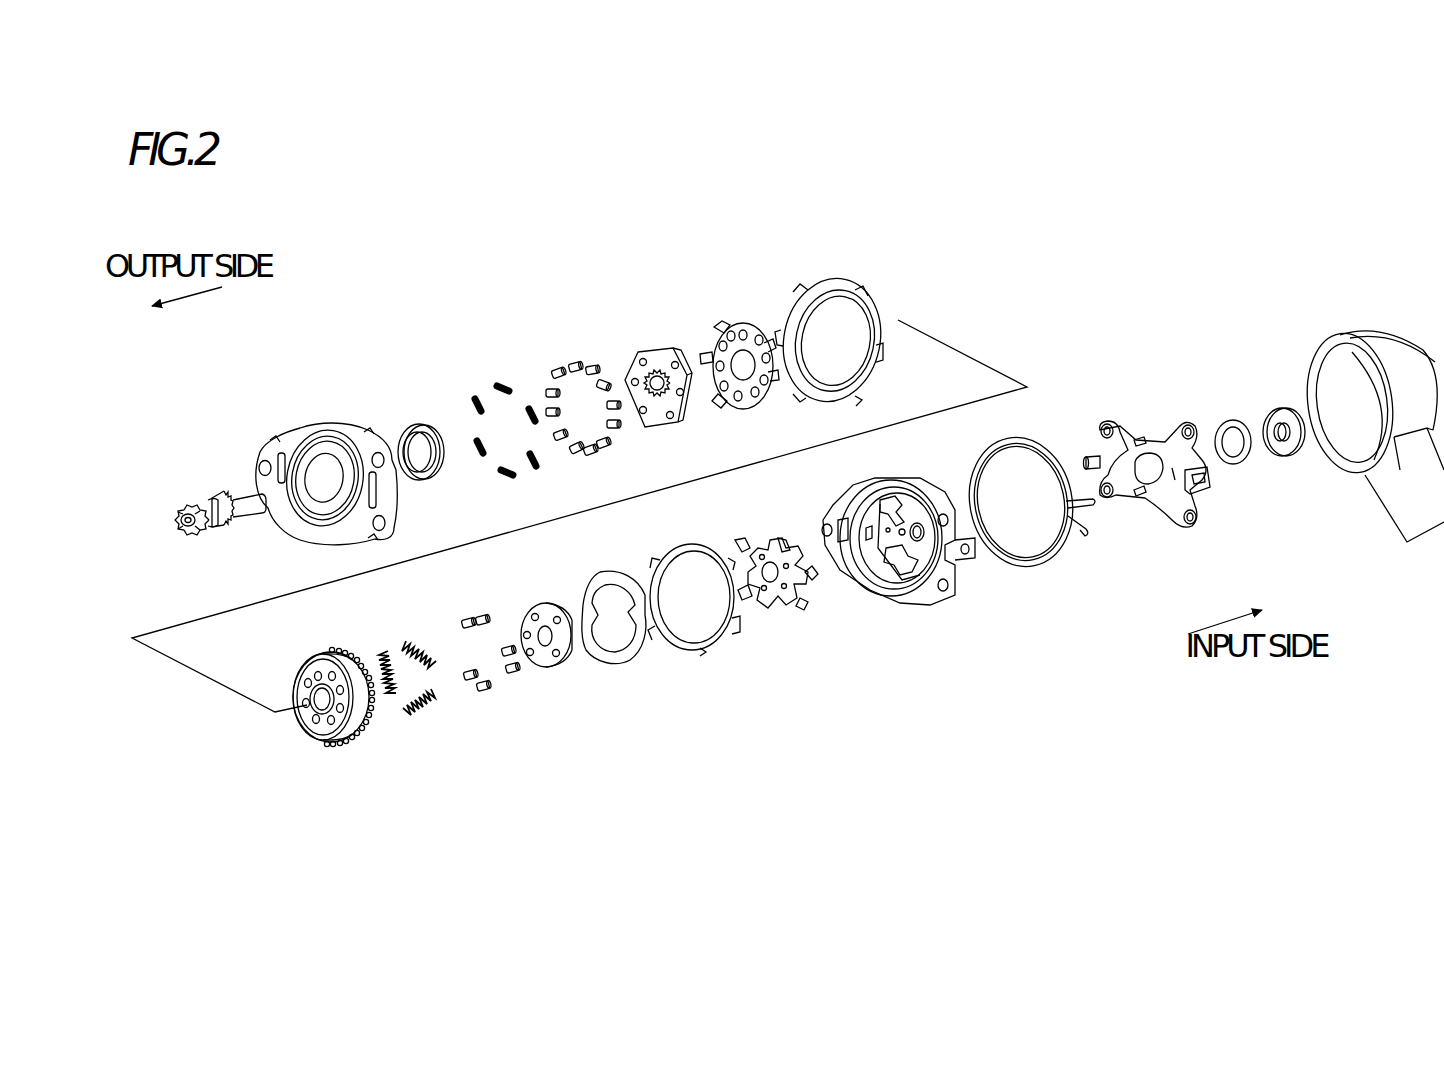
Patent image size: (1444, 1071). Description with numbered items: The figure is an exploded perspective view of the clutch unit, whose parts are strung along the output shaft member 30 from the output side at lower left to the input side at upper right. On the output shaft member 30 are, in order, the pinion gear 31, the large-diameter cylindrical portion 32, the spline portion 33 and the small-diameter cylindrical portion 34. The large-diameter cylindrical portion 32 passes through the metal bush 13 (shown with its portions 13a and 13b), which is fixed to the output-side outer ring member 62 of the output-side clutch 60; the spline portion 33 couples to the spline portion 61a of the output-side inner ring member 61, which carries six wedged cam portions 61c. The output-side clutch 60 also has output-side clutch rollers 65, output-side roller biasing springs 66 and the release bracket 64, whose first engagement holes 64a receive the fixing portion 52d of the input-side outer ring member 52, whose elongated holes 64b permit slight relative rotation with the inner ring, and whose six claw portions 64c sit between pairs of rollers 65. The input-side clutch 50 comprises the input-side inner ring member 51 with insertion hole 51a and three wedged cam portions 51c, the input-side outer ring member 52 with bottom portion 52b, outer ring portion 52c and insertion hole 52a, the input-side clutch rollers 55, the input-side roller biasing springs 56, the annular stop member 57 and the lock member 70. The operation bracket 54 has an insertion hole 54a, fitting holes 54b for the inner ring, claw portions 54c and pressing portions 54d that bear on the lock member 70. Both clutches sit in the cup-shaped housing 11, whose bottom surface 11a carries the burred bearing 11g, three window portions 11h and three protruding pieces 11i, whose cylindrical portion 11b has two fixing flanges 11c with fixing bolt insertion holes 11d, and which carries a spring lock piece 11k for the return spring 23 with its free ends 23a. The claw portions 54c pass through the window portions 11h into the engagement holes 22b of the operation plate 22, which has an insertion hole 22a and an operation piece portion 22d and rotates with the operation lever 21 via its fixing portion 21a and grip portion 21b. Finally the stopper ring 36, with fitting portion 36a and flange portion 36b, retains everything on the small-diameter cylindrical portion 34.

The housing 11 is at (947, 632).
The bottom surface 11a is at (880, 500).
The cylindrical portion 11b is at (906, 480).
The fixing flanges 11c is at (836, 516).
The fixing bolt insertion hole 11d is at (826, 524).
The bearing 11g is at (902, 512).
The window portions 11h is at (912, 545).
The protruding pieces 11i is at (878, 600).
The spring lock piece 11k is at (968, 566).
The metal bush 13 is at (376, 393).
The bearing 13a is at (428, 425).
The bearing inner race 13b is at (430, 475).
The operation lever 21 is at (1347, 328).
The fixing portion 21a is at (1386, 348).
The grip portion 21b is at (1427, 543).
The operation plate 22 is at (1168, 430).
The insertion hole 22a is at (1152, 458).
The engagement holes 22b is at (1136, 437).
The operation piece portion 22d is at (1207, 482).
The return spring 23 is at (1047, 602).
The free ends 23a is at (1085, 537).
The output shaft member 30 is at (196, 473).
The pinion gear 31 is at (185, 517).
The large-diameter cylindrical portion 32 is at (214, 535).
The spline portion 33 is at (213, 503).
The small-diameter cylindrical portion 34 is at (242, 498).
The stopper ring 36 is at (1258, 360).
The fitting portion 36a is at (1266, 428).
The flange portion 36b is at (1277, 408).
The input-side clutch 50 is at (622, 808).
The input-side inner ring member 51 is at (553, 685).
The insertion hole 51a is at (528, 622).
The wedged cam portions 51c is at (570, 650).
The input-side outer ring member 52 is at (342, 792).
The insertion hole 52a is at (300, 717).
The bottom portion 52b is at (345, 742).
The outer ring portion 52c is at (312, 652).
The fixing portion 52d is at (322, 722).
The operation bracket 54 is at (792, 642).
The insertion hole 54a is at (775, 548).
The fitting holes 54b is at (772, 600).
The claw portions 54c is at (805, 590).
The pressing portions 54d is at (740, 545).
The input-side clutch rollers 55 is at (487, 707).
The input-side roller biasing springs 56 is at (422, 732).
The stop member 57 is at (637, 677).
The output-side clutch 60 is at (488, 232).
The output-side inner ring member 61 is at (638, 328).
The spline portion 61a is at (648, 380).
The wedged cam portions 61c is at (670, 430).
The output-side outer ring member 62 is at (812, 290).
The release bracket 64 is at (716, 296).
The first engagement holes 64a is at (735, 405).
The elongated holes 64b is at (730, 323).
The claw portions 64c is at (703, 360).
The output-side clutch rollers 65 is at (545, 348).
The output-side roller biasing springs 66 is at (478, 375).
The lock member 70 is at (707, 667).